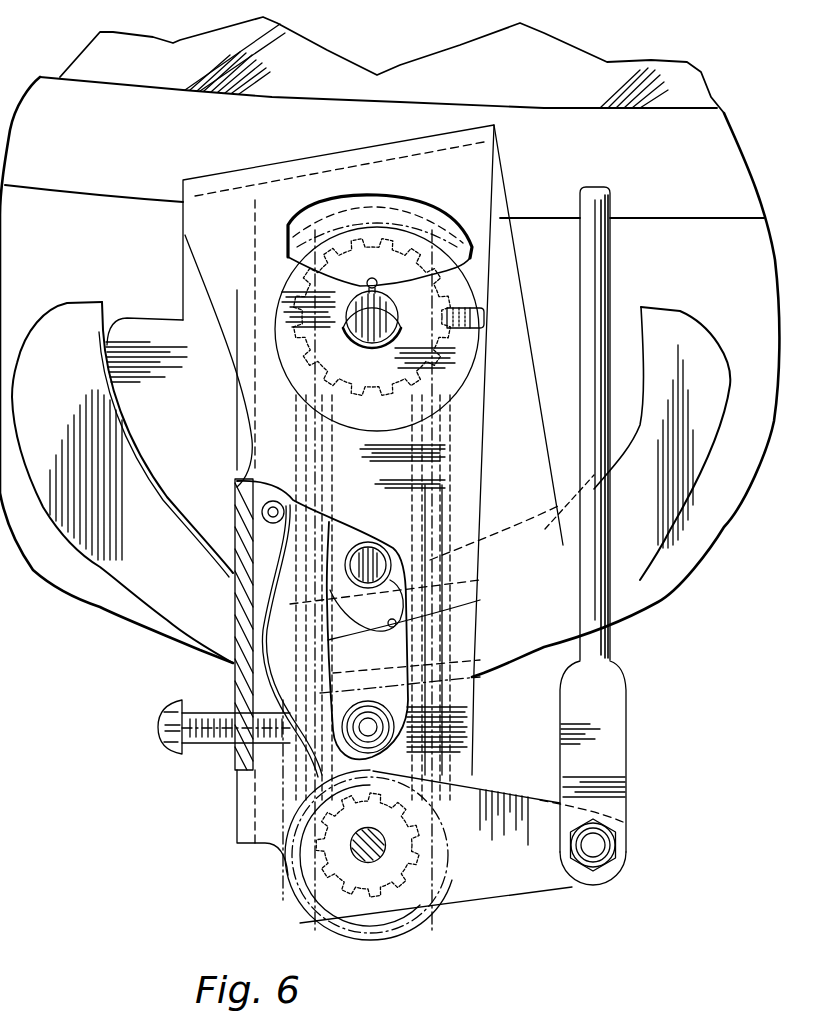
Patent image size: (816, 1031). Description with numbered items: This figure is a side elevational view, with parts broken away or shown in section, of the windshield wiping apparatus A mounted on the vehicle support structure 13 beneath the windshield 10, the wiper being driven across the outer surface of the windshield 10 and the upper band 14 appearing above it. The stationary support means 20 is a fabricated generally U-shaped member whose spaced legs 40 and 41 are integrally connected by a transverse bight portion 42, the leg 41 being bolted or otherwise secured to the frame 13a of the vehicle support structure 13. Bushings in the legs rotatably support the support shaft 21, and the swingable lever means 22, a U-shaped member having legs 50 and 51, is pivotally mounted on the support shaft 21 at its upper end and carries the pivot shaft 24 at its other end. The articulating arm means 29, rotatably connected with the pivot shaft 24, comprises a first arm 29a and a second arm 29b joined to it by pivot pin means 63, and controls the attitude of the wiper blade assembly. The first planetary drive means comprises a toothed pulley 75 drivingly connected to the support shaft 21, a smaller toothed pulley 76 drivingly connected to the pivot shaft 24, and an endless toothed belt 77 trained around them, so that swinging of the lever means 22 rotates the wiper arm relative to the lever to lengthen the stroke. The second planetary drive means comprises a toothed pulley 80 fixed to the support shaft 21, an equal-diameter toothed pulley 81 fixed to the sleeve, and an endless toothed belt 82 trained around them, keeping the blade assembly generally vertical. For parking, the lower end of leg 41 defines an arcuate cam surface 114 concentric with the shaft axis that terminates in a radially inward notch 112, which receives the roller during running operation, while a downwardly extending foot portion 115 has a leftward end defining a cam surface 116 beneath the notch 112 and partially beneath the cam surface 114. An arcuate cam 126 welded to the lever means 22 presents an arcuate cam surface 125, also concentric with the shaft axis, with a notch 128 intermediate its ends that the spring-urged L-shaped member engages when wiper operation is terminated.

The windshield 10 is at (575, 60).
The vehicle support structure 13 is at (718, 138).
The frame 13a is at (715, 193).
The upper band 14 is at (90, 88).
The stationary support means 20 is at (175, 172).
The support shaft 21 is at (375, 300).
The lever means 22 is at (228, 770).
The pivot shaft 24 is at (378, 855).
The articulating arm means 29 is at (600, 270).
The first arm 29a is at (530, 870).
The second arm 29b is at (628, 700).
The leg 40 is at (205, 223).
The leg 41 is at (195, 287).
The bight portion 42 is at (297, 170).
The leg 50 is at (245, 415).
The leg 51 is at (262, 510).
The pivot pin means 63 is at (597, 845).
The toothed pulley 75 is at (428, 262).
The toothed pulley 76 is at (360, 925).
The endless toothed belt 77 is at (445, 483).
The toothed pulley 80 is at (470, 312).
The toothed pulley 81 is at (295, 873).
The endless toothed belt 82 is at (430, 440).
The notch 112 is at (368, 546).
The cam surface 114 is at (205, 520).
The foot portion 115 is at (290, 668).
The cam surface 116 is at (330, 628).
The arcuate cam surface 125 is at (498, 560).
The arcuate cam 126 is at (634, 557).
The notch 128 is at (395, 625).
The windshield wiping apparatus A is at (137, 650).